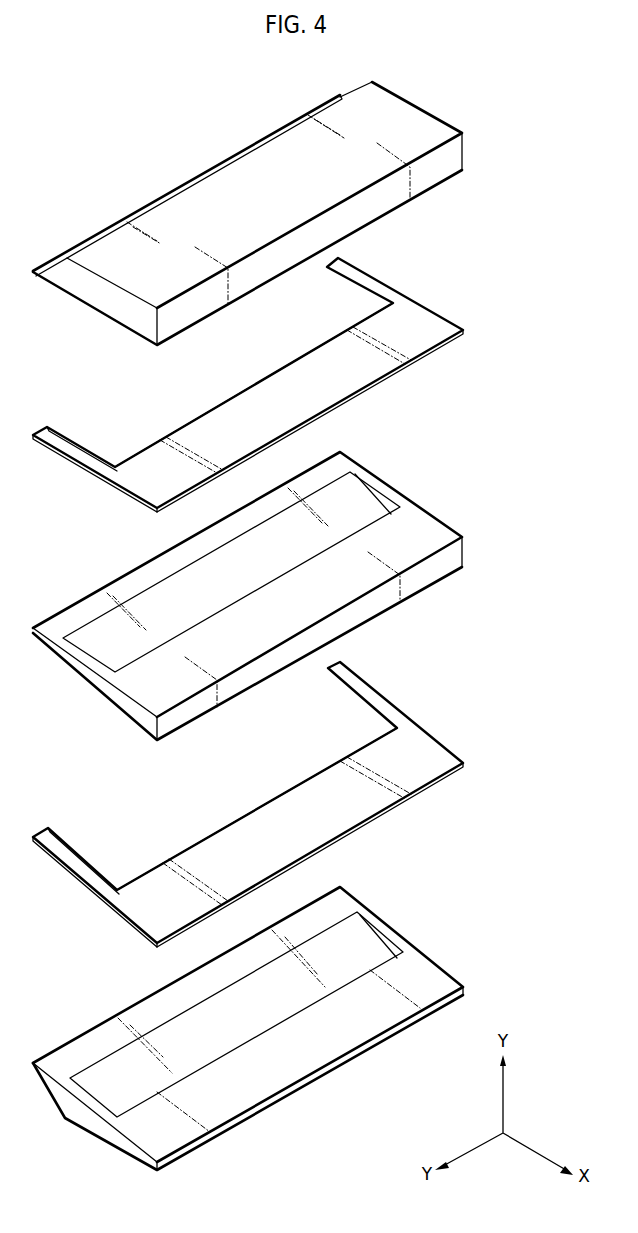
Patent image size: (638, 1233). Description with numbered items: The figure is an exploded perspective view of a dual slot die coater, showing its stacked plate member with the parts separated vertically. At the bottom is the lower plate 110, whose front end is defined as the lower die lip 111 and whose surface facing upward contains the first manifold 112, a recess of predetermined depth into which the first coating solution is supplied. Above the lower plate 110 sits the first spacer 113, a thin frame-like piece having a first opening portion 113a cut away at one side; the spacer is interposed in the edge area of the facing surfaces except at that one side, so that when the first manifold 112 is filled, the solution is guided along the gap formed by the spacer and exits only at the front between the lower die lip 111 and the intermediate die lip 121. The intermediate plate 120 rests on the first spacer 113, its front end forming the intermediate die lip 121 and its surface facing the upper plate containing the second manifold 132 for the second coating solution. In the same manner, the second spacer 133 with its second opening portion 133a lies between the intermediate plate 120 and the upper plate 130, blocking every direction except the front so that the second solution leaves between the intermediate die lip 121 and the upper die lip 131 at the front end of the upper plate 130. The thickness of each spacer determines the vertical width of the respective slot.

The lower plate 110 is at (477, 943).
The lower die lip 111 is at (97, 1033).
The first manifold 112 is at (367, 958).
The first spacer 113 is at (433, 750).
The first opening portion 113a is at (127, 830).
The intermediate plate 120 is at (477, 520).
The intermediate die lip 121 is at (117, 580).
The second manifold 132 is at (358, 512).
The upper plate 130 is at (477, 115).
The upper die lip 131 is at (88, 238).
The second spacer 133 is at (442, 328).
The second opening portion 133a is at (117, 420).